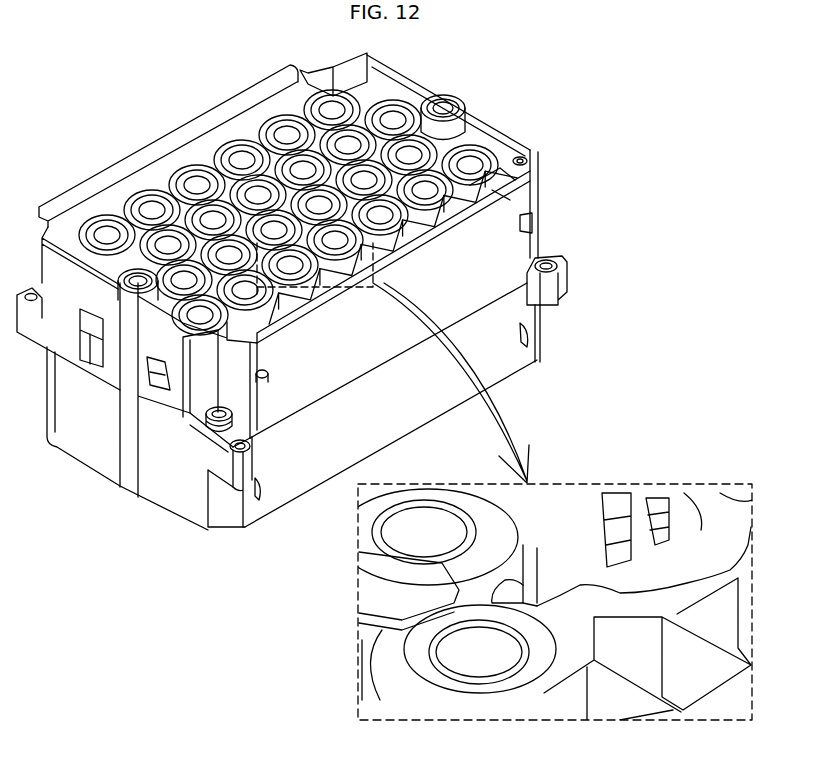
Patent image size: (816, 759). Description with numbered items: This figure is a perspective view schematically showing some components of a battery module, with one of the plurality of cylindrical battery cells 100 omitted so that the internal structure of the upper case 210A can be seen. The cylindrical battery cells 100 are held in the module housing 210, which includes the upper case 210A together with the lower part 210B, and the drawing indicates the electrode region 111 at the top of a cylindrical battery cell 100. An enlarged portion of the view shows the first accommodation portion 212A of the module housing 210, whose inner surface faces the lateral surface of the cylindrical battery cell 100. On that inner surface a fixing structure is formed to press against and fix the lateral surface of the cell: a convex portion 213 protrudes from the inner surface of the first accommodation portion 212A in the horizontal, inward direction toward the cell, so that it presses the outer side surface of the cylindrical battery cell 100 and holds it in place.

The cylindrical battery cell 100 is at (372, 652).
The electrode terminal of battery cell 111 is at (475, 645).
The module housing 210 is at (645, 247).
The upper case 210A is at (508, 245).
The lower housing 210B is at (505, 337).
The first accommodation portion 212A is at (238, 148).
The convex portion 213 is at (660, 525).